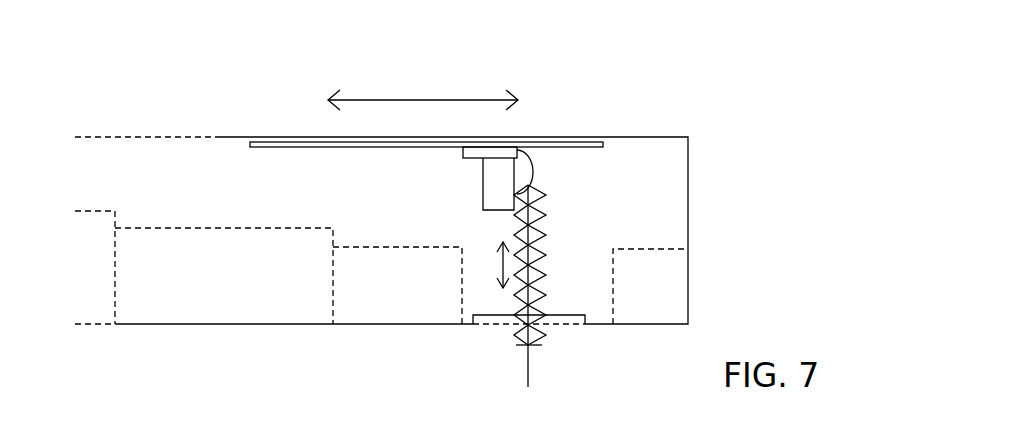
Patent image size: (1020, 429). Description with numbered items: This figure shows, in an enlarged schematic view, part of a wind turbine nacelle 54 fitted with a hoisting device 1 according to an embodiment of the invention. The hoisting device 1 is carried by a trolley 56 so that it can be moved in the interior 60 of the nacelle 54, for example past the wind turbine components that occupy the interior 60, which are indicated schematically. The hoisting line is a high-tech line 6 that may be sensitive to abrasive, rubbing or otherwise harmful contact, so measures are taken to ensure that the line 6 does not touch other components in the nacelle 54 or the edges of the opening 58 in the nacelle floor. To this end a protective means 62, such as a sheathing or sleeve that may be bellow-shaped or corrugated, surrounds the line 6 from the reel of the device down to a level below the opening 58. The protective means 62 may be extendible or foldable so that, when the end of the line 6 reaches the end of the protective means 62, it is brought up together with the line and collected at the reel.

The hoisting device 1 is at (532, 165).
The high-tech line 6 is at (528, 358).
The nacelle 54 is at (689, 237).
The trolley 56 is at (500, 147).
The opening 58 is at (505, 325).
The interior 60 is at (263, 211).
The protective means 62 is at (546, 265).